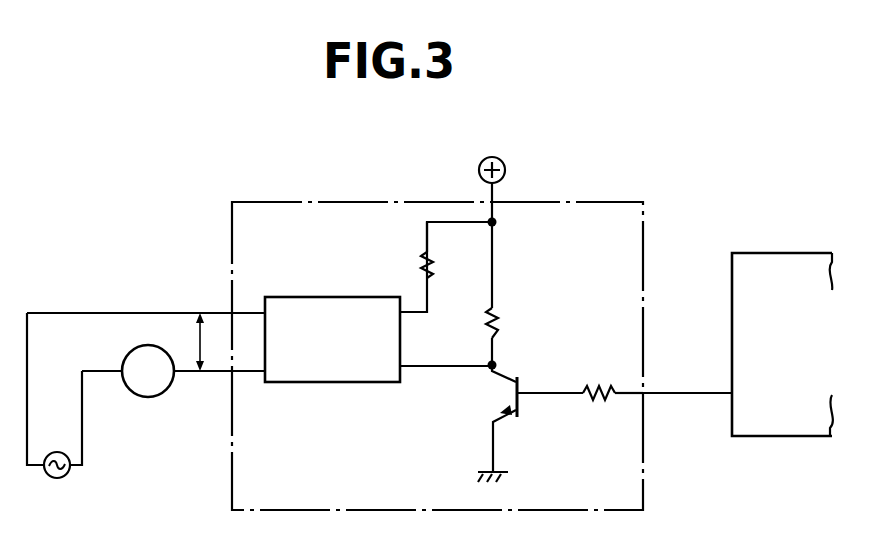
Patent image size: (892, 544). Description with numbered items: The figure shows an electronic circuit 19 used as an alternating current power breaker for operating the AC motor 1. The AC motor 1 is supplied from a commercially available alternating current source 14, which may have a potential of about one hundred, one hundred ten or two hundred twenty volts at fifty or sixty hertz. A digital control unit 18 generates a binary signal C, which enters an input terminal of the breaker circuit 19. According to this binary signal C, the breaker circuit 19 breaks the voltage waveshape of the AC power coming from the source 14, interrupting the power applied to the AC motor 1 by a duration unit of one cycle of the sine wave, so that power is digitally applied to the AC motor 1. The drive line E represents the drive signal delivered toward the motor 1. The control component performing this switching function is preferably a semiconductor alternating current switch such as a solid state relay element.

The AC motor 1 is at (156, 397).
The alternating current source 14 is at (67, 476).
The digital control unit 18 is at (786, 253).
The alternating current power breaker circuit 19 is at (643, 229).
The binary signal C is at (685, 394).
The drive line E is at (208, 342).